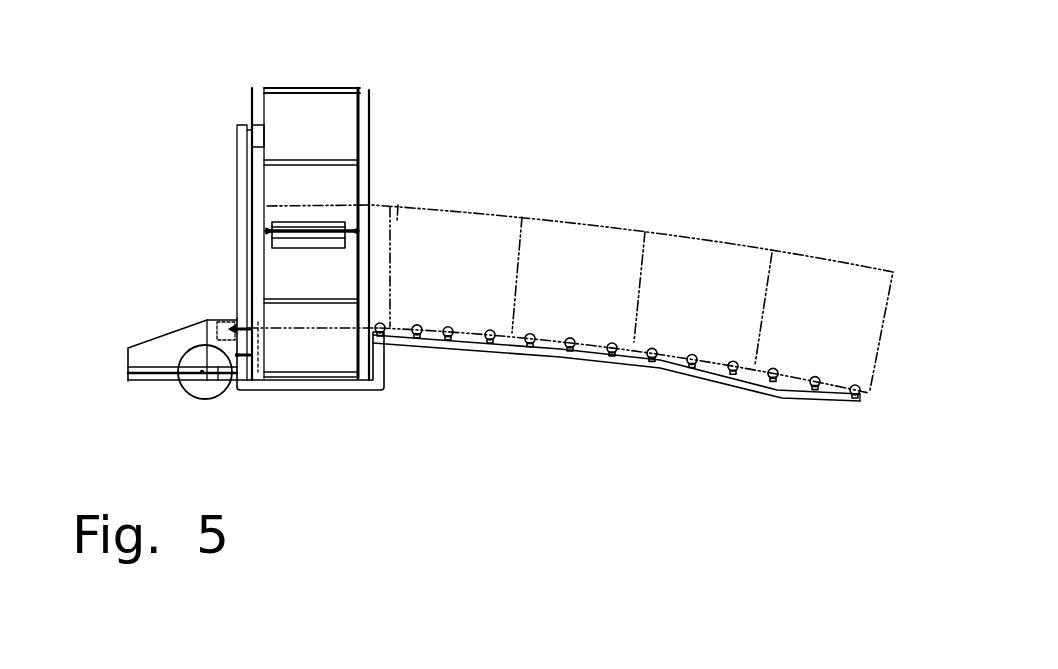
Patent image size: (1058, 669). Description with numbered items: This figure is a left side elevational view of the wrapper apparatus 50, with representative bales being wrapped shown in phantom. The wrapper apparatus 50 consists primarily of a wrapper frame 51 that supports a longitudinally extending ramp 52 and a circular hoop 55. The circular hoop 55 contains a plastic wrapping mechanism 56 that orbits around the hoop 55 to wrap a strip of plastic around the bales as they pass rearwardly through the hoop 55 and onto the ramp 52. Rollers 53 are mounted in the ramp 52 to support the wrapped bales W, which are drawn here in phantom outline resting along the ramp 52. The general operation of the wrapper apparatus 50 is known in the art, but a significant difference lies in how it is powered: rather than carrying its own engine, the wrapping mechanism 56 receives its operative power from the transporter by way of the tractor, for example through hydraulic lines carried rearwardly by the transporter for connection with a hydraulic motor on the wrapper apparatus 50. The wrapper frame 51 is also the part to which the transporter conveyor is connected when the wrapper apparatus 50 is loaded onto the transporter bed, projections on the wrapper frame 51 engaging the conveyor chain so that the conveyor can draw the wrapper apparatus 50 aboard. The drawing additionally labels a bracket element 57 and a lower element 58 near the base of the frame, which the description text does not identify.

The wrapper apparatus 50 is at (543, 152).
The wrapper frame 51 is at (245, 388).
The ramp 52 is at (556, 352).
The rollers 53 is at (574, 338).
The circular hoop 55 is at (370, 97).
The plastic wrapping mechanism 56 is at (327, 221).
The bracket 57 is at (183, 333).
The drive unit 58 is at (263, 352).
The wrapped bales W is at (568, 222).